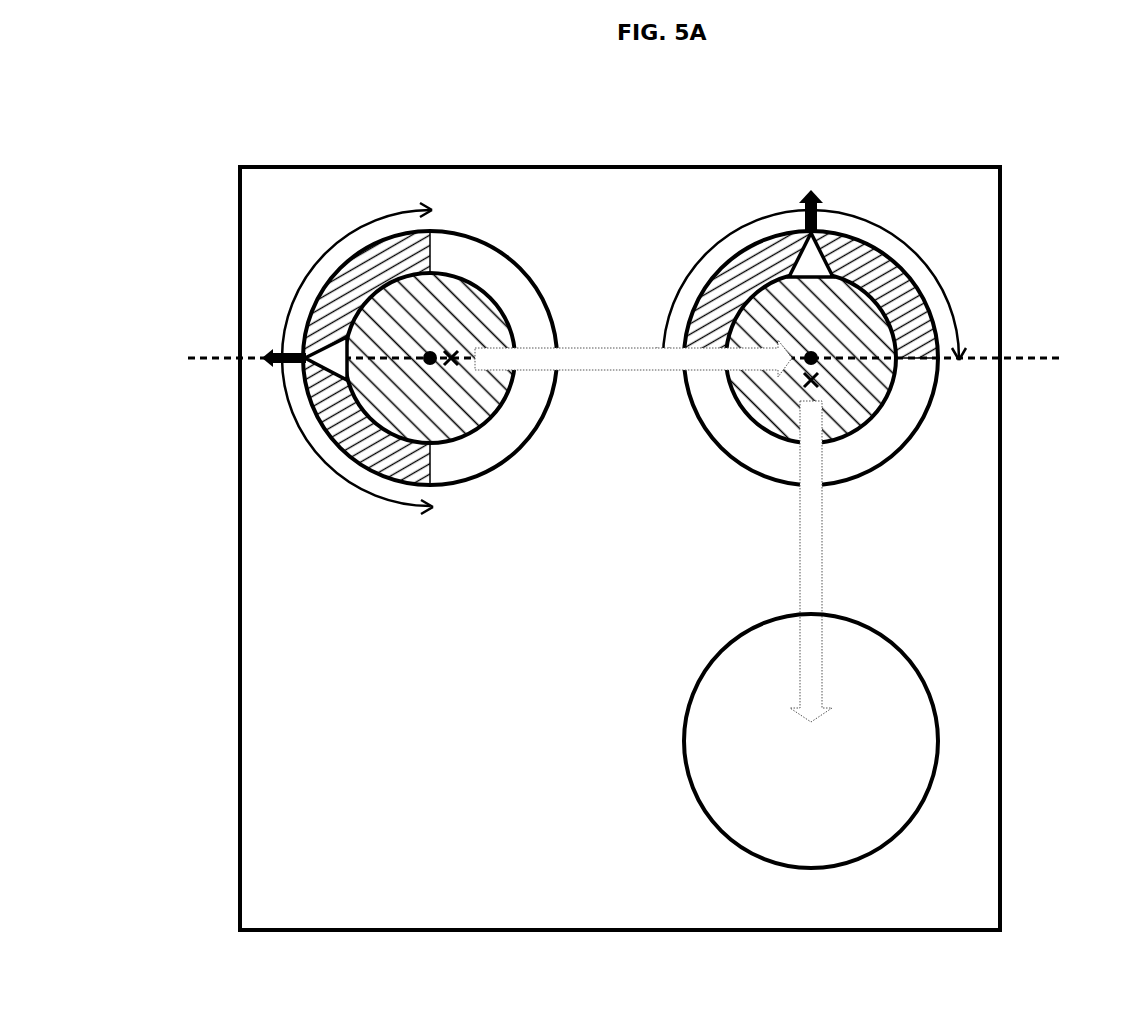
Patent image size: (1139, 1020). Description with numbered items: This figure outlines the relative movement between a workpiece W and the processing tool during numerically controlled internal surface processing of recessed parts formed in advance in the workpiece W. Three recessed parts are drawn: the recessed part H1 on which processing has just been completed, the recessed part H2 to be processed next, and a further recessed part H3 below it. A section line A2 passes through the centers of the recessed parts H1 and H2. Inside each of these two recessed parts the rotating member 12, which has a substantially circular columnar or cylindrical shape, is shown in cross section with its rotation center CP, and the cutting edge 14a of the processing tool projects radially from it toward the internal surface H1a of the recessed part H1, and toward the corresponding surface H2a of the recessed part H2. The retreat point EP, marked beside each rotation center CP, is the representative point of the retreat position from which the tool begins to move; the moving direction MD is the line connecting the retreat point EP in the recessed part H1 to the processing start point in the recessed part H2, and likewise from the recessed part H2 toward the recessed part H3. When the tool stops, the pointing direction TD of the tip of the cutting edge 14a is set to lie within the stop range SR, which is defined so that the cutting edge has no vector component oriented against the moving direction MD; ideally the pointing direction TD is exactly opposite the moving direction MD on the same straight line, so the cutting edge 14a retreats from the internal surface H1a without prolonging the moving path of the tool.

The workpiece W is at (918, 167).
The line A2- A2 is at (618, 359).
The recessed part H1 is at (460, 265).
The internal surface H1a is at (470, 470).
The recessed part H2 is at (907, 395).
The second hole non-processed region H2a is at (862, 470).
The third hole H3 is at (727, 686).
The rotating member 12 is at (500, 296).
The cutting edge 14a is at (325, 378).
The stop range SR is at (337, 477).
The pointing direction TD is at (268, 345).
The moving direction MD is at (583, 368).
The rotation center CP is at (430, 352).
The retreat point EP is at (452, 366).